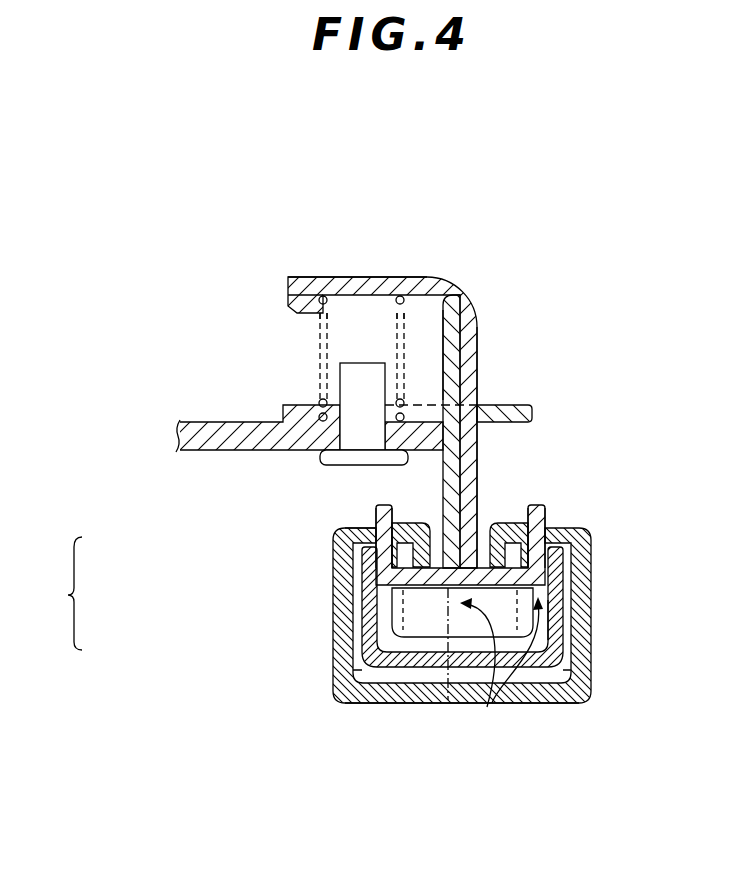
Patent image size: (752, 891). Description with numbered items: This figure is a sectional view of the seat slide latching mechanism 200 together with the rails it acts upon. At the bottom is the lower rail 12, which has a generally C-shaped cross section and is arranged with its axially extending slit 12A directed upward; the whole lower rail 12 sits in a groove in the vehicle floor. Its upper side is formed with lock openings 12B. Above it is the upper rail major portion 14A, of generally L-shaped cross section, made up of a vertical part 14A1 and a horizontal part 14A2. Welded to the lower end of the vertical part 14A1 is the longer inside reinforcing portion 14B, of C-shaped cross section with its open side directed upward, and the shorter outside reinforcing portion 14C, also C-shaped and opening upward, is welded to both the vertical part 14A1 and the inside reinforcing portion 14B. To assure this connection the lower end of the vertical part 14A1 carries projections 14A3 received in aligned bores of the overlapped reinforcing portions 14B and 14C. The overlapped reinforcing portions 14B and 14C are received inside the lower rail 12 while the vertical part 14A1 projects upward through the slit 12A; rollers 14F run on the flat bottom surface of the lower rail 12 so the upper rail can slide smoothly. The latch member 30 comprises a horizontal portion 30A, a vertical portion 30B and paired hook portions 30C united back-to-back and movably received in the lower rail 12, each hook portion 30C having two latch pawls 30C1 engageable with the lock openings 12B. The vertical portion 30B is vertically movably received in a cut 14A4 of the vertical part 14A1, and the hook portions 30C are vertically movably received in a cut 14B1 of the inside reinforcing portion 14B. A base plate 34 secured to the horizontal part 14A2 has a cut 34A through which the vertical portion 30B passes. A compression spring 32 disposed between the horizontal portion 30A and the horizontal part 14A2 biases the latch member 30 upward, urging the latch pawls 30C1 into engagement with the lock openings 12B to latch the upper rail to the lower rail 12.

The seat slide latching mechanism 200 is at (418, 207).
The latch member 30 is at (484, 461).
The horizontal portion 30A is at (345, 277).
The vertical portion 30B is at (479, 326).
The hook portions 30C is at (420, 578).
The latch pawls 30C1 is at (375, 508).
The compression spring 32 is at (318, 314).
The base plate 34 is at (533, 406).
The cut 34A is at (426, 388).
The lower rail 12 is at (457, 698).
The slit 12A is at (482, 538).
The lock openings 12B is at (367, 530).
The upper rail major portion 14A is at (51, 593).
The vertical part 14A1 is at (455, 624).
The horizontal part 14A2 is at (192, 452).
The projections 14A3 is at (487, 707).
The cut 14A4 is at (492, 703).
The inside reinforcing portion 14B is at (533, 703).
The cut 14B1 is at (545, 617).
The outside reinforcing portion 14C is at (415, 668).
The rollers 14F is at (355, 682).